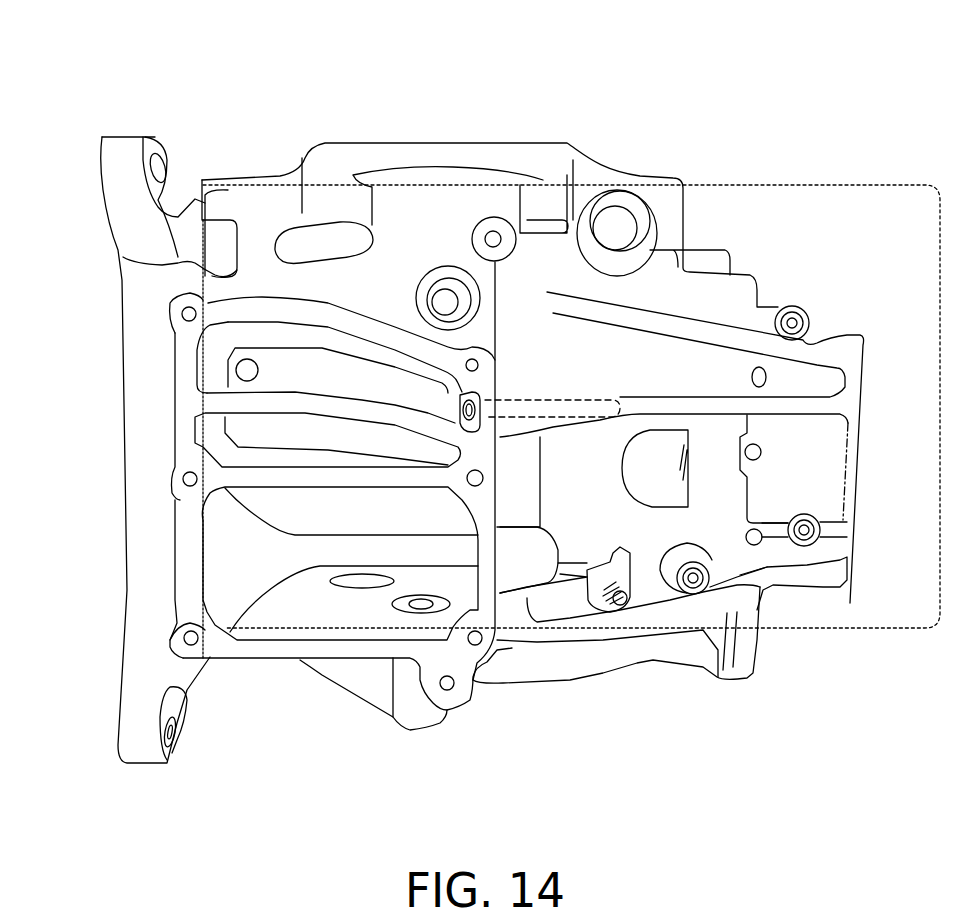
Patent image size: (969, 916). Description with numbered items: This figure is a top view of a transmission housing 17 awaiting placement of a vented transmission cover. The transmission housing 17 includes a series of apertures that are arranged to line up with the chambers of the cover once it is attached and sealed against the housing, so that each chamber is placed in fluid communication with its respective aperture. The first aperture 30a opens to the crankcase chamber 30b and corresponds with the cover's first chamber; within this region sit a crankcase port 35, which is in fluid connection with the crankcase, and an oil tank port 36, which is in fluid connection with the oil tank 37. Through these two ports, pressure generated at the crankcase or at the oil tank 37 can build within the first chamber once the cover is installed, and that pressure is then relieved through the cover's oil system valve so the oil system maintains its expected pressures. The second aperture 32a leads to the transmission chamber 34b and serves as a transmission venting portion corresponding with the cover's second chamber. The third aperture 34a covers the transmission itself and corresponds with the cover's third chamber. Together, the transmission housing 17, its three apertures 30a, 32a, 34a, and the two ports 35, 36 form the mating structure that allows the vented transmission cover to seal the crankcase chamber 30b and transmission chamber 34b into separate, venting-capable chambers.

The transmission housing 17 is at (690, 218).
The first aperture 30a is at (185, 362).
The crankcase chamber 30b is at (292, 328).
The second aperture 32a is at (183, 428).
The third aperture 34a is at (183, 559).
The transmission chamber 34b is at (282, 610).
The crankcase port 35 is at (247, 350).
The oil tank port 36 is at (472, 380).
The oil tank 37 is at (832, 185).